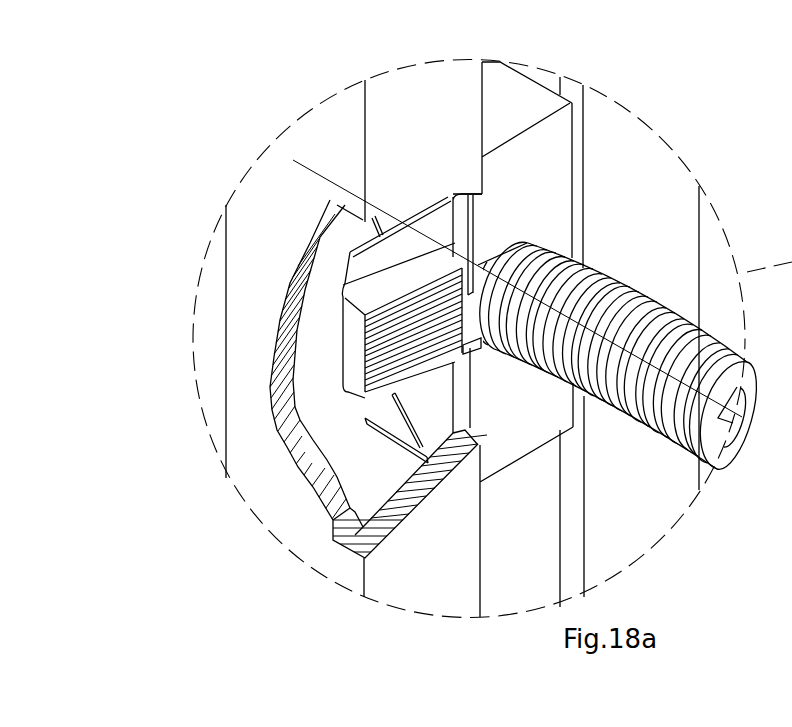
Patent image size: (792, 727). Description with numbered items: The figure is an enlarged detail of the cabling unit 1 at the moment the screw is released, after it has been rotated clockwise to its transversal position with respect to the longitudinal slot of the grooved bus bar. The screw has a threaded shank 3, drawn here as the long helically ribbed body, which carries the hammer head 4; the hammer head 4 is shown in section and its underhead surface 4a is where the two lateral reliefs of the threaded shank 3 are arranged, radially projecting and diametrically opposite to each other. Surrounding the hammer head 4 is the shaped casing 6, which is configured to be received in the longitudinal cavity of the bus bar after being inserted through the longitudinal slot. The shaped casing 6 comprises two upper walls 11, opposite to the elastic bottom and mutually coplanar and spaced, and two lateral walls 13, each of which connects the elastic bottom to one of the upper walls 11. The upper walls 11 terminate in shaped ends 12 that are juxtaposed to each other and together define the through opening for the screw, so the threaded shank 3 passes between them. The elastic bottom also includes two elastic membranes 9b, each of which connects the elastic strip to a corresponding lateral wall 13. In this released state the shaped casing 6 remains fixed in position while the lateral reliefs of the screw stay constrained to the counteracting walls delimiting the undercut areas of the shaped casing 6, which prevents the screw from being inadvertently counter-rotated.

The cabling unit 1 is at (588, 112).
The threaded shank 3 is at (668, 418).
The hammer head 4 is at (392, 278).
The underhead surface 4a is at (397, 337).
The shaped casing 6 is at (548, 83).
The elastic membranes 9b is at (402, 410).
The upper walls 11 is at (466, 233).
The shaped ends 12 is at (562, 232).
The lateral walls 13 is at (398, 438).